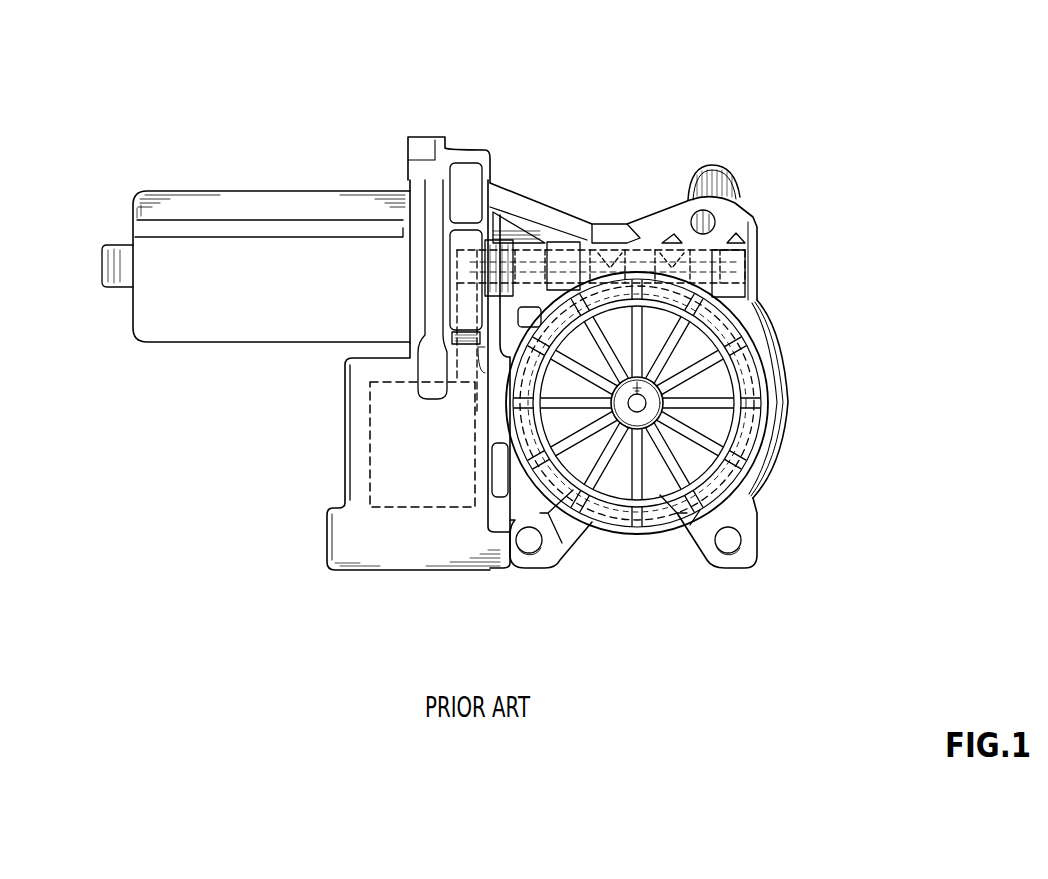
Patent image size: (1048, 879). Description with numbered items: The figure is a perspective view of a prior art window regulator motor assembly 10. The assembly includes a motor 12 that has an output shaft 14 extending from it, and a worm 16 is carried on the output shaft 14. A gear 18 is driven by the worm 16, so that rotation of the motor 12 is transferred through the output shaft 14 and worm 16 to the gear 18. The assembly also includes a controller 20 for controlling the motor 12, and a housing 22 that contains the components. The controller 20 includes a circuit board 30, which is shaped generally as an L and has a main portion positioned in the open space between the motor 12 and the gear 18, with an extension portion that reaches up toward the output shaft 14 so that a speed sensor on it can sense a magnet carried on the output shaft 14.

The window regulator motor assembly 10 is at (777, 48).
The motor 12 is at (265, 192).
The output shaft 14 is at (573, 257).
The worm 16 is at (657, 250).
The gear 18 is at (750, 390).
The controller 20 is at (355, 468).
The housing 22 is at (770, 325).
The circuit board 30 is at (370, 412).